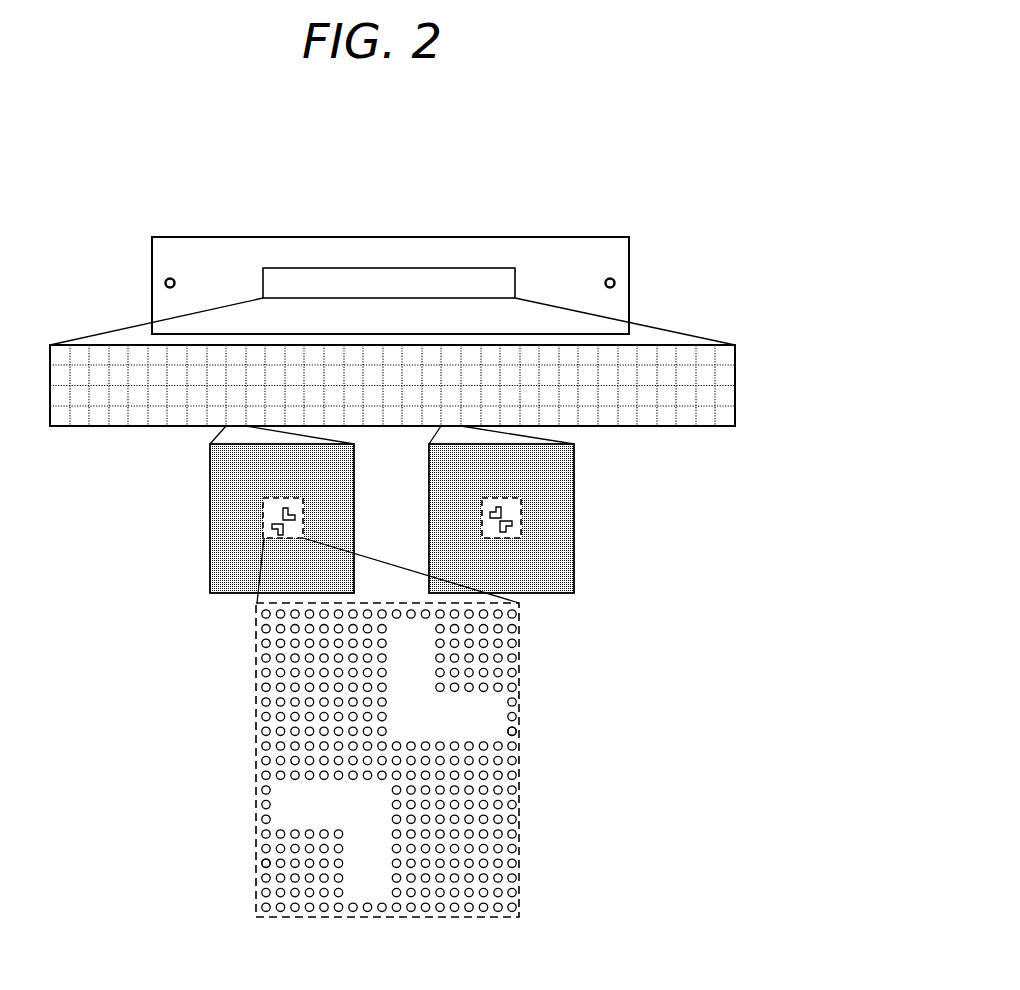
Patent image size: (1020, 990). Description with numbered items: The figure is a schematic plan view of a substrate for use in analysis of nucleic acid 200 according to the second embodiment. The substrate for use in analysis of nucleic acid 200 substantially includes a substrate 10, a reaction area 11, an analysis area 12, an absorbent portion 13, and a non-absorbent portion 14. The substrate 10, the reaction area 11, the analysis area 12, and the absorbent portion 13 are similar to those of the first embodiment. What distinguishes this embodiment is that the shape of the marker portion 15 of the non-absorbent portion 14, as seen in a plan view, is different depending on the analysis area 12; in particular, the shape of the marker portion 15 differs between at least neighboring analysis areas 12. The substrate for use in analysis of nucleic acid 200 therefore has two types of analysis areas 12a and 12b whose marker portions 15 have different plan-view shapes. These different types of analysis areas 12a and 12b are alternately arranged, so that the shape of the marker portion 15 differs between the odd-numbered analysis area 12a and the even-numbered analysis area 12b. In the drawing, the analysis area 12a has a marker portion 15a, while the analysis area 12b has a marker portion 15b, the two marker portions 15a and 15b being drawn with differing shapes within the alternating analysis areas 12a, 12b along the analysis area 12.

The substrate for use in analysis of nucleic acid 200 is at (475, 208).
The substrate 10 is at (225, 257).
The reaction area 11 is at (368, 279).
The analysis area 12 is at (65, 398).
The odd-numbered analysis area 12a is at (203, 582).
The even-numbered analysis area 12b is at (589, 541).
The absorbent portion 13 is at (265, 732).
The non-absorbent portion 14 is at (265, 863).
The marker portion 15 is at (470, 713).
The marker portion of odd-numbered analysis area 15a is at (268, 513).
The marker portion of even-numbered analysis area 15b is at (512, 511).